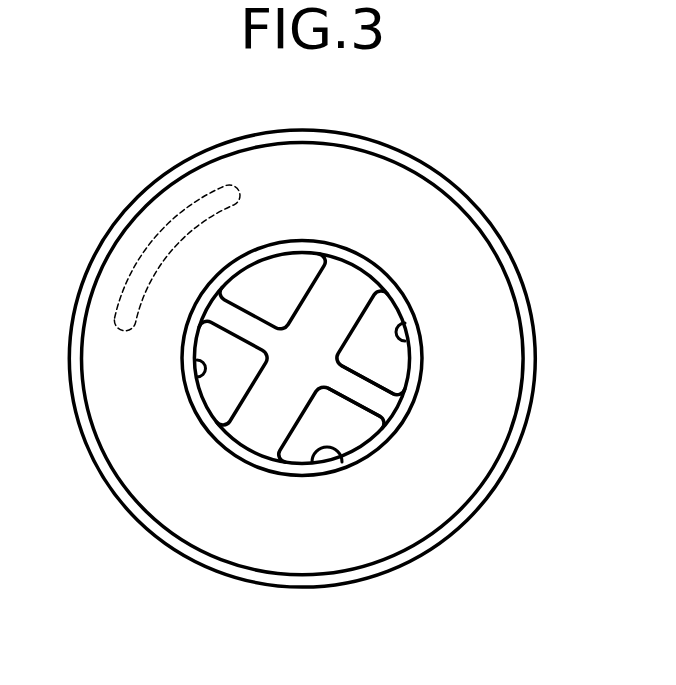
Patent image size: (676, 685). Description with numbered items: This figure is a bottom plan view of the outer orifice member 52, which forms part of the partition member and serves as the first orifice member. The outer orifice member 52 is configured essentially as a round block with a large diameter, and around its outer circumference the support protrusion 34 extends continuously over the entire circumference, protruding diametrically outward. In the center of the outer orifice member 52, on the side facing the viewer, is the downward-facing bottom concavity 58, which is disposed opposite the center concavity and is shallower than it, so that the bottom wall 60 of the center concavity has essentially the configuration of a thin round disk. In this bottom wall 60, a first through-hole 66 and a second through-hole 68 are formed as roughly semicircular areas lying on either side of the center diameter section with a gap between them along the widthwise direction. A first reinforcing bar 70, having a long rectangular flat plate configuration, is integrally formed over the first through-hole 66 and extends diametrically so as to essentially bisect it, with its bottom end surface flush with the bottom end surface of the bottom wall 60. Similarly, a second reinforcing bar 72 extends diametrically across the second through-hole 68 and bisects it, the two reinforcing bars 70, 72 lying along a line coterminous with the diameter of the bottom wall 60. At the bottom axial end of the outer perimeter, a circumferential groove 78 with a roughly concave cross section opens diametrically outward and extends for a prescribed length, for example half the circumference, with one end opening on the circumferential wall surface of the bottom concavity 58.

The support protrusion 34 is at (115, 485).
The outer orifice member 52 is at (438, 156).
The bottom concavity 58 is at (338, 452).
The bottom wall 60 is at (345, 288).
The first through-hole 66 is at (415, 338).
The second through-hole 68 is at (205, 383).
The first reinforcing bar 70 is at (362, 392).
The second reinforcing bar 72 is at (249, 330).
The circumferential groove 78 is at (153, 243).